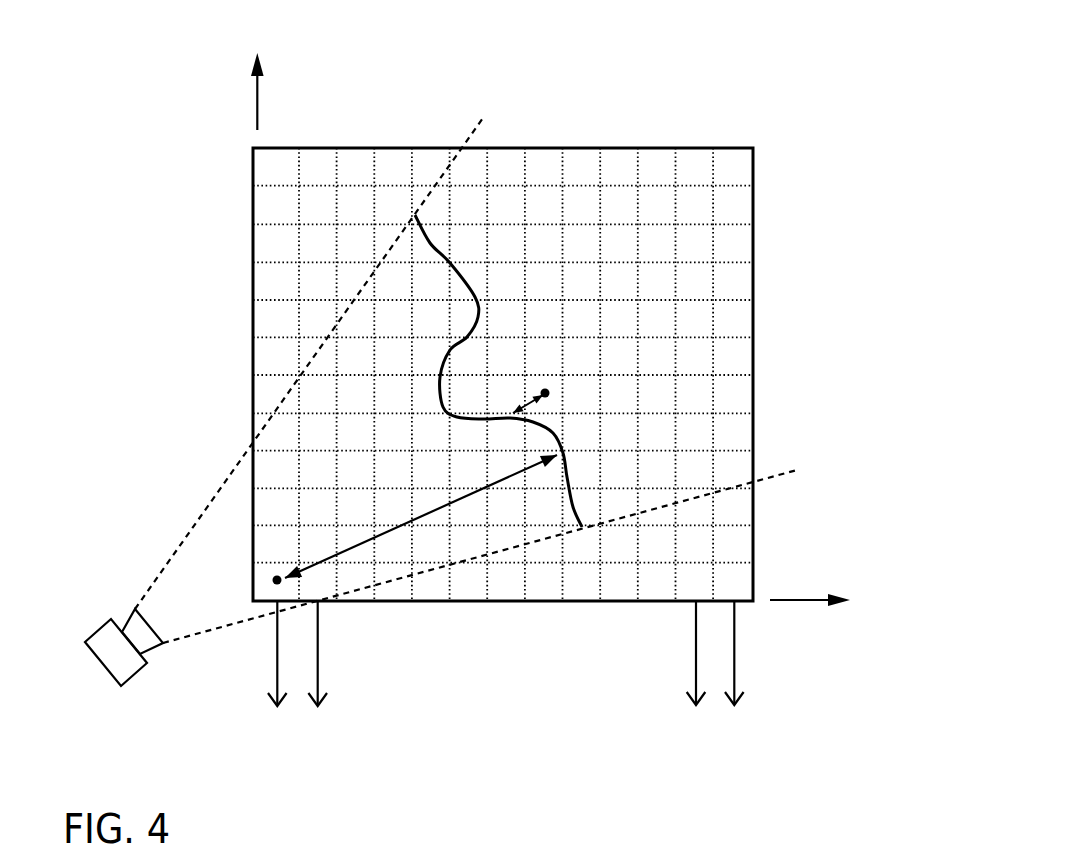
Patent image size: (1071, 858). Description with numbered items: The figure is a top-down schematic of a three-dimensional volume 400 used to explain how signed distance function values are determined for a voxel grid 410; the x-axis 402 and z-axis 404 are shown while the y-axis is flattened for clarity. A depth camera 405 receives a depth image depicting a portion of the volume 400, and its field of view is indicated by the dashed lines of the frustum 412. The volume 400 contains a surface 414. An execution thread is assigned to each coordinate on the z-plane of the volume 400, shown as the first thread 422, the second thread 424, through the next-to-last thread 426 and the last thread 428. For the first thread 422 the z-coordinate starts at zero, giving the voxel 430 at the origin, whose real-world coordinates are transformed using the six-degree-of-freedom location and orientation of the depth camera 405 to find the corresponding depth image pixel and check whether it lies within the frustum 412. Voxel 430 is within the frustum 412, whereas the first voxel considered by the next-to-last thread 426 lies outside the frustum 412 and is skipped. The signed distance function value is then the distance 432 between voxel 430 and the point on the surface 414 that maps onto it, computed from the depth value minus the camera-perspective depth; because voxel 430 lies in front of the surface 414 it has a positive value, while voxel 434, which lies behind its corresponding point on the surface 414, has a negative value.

The 3D volume 400 is at (784, 108).
The x-axis 402 is at (805, 598).
The z-axis 404 is at (259, 97).
The depth camera 405 is at (101, 664).
The grid of volume elements 410 is at (612, 148).
The frustum 412 is at (188, 533).
The surface 414 is at (450, 263).
The execution thread T1 422 is at (279, 740).
The execution thread T2 424 is at (322, 740).
The execution thread Tn-1 426 is at (691, 740).
The execution thread Tn 428 is at (740, 740).
The voxel 430 is at (275, 576).
The distance 432 is at (443, 505).
The voxel 434 is at (548, 391).